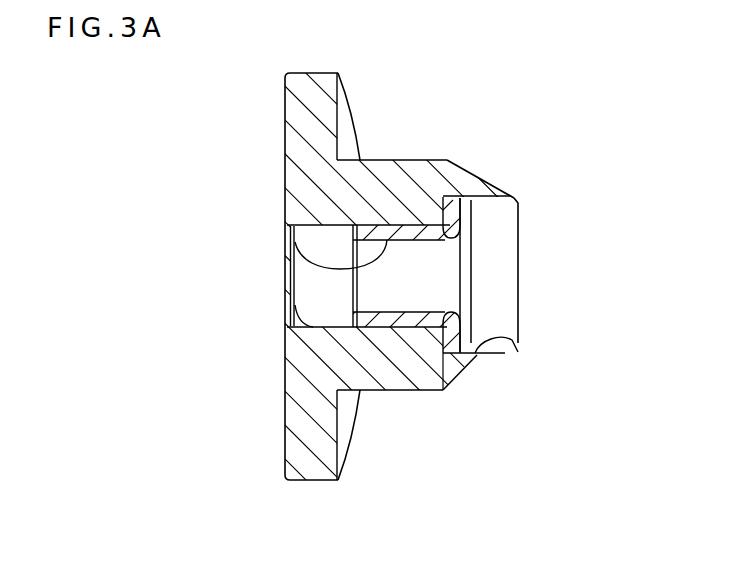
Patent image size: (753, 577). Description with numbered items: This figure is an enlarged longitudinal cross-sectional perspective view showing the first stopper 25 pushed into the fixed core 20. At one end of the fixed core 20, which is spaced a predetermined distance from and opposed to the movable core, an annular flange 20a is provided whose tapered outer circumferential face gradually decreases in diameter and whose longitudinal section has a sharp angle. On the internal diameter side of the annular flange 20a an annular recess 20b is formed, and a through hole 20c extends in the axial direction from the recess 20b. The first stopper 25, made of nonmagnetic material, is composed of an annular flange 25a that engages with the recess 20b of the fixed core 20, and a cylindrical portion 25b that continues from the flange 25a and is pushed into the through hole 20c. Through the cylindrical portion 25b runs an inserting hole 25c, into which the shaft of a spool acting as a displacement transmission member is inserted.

The fixed core 20 is at (395, 160).
The annular flange 20a is at (474, 175).
The annular recess 20b is at (518, 343).
The through hole 20c is at (283, 308).
The first stopper 25 is at (480, 271).
The annular flange 25a is at (443, 390).
The cylindrical portion 25b is at (283, 368).
The inserting hole 25c is at (287, 232).